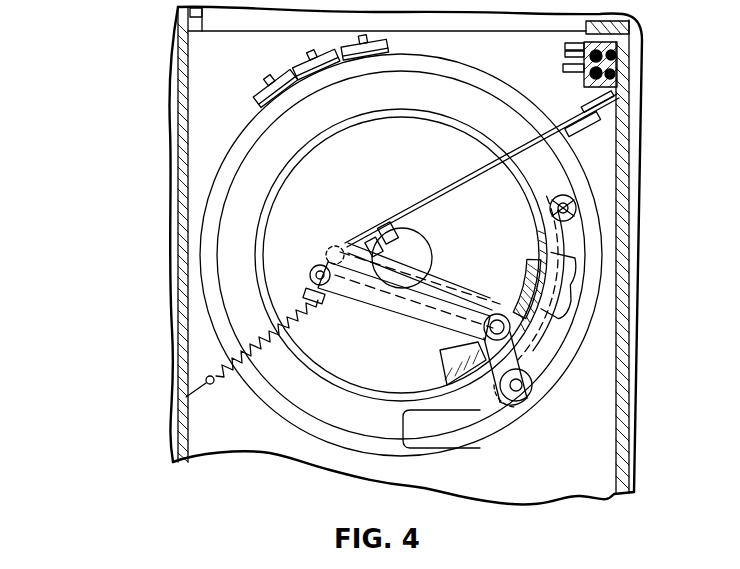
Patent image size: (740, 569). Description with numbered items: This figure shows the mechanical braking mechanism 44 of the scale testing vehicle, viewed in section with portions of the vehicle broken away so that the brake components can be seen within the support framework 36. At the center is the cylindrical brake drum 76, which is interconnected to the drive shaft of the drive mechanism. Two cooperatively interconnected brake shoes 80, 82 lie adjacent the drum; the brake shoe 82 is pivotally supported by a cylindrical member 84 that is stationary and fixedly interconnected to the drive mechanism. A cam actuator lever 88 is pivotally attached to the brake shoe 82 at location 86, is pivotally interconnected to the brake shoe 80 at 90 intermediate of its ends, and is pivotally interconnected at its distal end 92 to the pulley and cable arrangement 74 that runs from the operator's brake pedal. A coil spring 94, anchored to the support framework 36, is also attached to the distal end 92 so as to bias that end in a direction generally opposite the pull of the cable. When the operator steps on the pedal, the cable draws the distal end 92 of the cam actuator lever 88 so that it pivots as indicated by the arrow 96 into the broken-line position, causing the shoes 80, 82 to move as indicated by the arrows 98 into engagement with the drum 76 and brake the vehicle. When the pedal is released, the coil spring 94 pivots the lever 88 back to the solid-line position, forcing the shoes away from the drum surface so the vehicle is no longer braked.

The support framework 36 is at (183, 369).
The mechanical braking mechanism 44 is at (98, 317).
The pulley and cable arrangement 74 is at (483, 190).
The brake drum 76 is at (443, 122).
The brake shoe 80 is at (516, 276).
The brake shoe 82 is at (556, 350).
The cylindrical member 84 is at (574, 200).
The pivot location 86 is at (521, 388).
The cam actuator lever 88 is at (392, 300).
The pivot connection 90 is at (497, 314).
The distal end 92 is at (316, 270).
The coil spring 94 is at (268, 338).
The arrow 96 is at (343, 312).
The arrows 98 is at (468, 345).